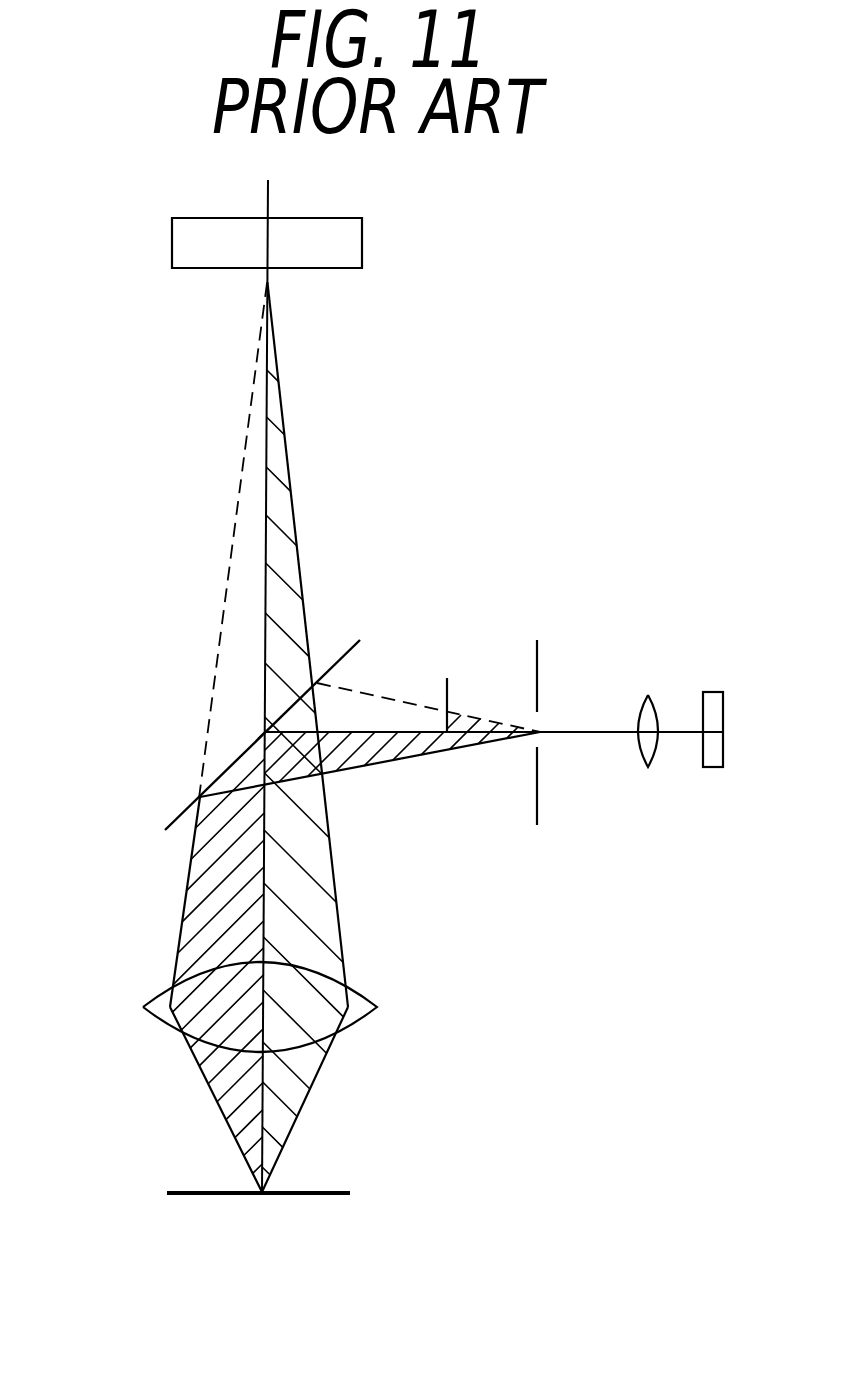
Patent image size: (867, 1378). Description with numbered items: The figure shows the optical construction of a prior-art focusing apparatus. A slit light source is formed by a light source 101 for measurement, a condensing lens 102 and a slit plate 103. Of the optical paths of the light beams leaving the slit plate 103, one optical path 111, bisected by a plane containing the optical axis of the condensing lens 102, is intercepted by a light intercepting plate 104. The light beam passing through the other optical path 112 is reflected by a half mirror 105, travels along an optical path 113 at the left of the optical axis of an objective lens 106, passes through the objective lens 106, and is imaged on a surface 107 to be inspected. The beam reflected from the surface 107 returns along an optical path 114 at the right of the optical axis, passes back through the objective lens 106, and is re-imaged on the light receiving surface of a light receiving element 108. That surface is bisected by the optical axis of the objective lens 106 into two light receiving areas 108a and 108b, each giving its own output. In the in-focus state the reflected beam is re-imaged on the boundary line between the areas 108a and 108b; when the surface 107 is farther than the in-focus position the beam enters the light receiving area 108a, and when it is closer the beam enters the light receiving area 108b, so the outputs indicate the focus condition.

The light source 101 is at (711, 697).
The condensing lens 102 is at (652, 765).
The slit plate 103 is at (538, 788).
The light intercepting plate 104 is at (445, 692).
The half mirror 105 is at (177, 817).
The objective lens 106 is at (378, 1010).
The surface to be inspected 107 is at (323, 1195).
The light receiving element 108 is at (299, 275).
The light receiving area 108a is at (190, 269).
The light receiving area 108b is at (347, 269).
The optical path 111 is at (478, 718).
The optical path 112 is at (393, 763).
The optical path 113 is at (190, 948).
The optical path 114 is at (280, 1110).